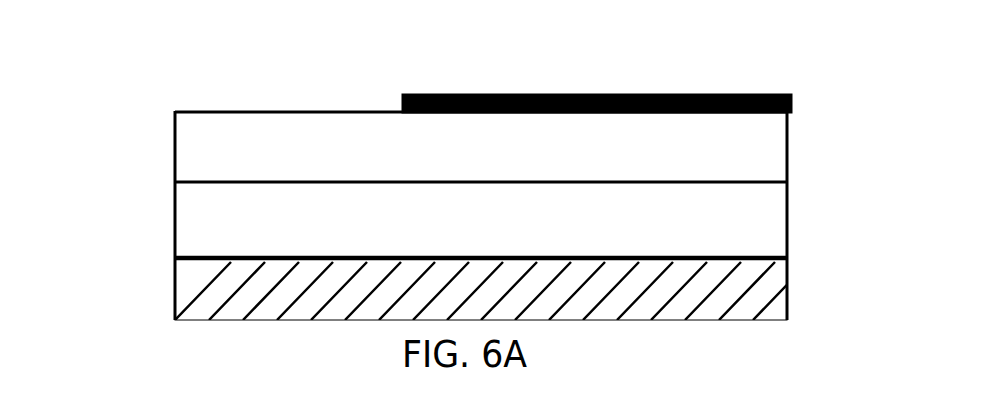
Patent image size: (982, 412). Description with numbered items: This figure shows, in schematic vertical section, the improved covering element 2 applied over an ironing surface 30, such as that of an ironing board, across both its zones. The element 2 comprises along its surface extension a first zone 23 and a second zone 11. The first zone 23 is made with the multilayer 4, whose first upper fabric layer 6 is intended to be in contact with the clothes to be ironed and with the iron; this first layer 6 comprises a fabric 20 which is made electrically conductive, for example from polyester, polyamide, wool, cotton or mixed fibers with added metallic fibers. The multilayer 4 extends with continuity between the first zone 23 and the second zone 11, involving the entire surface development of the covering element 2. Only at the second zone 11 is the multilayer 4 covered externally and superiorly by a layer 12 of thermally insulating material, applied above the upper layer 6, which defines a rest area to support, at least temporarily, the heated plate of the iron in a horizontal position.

The covering element 2 is at (163, 87).
The first zone 23 is at (313, 110).
The second zone 11 is at (510, 93).
The thermally insulating layer 12 is at (602, 107).
The first fabric layer 6 is at (750, 148).
The multilayer 4 is at (175, 182).
The fabric 20 is at (753, 222).
The ironing surface 30 is at (768, 302).